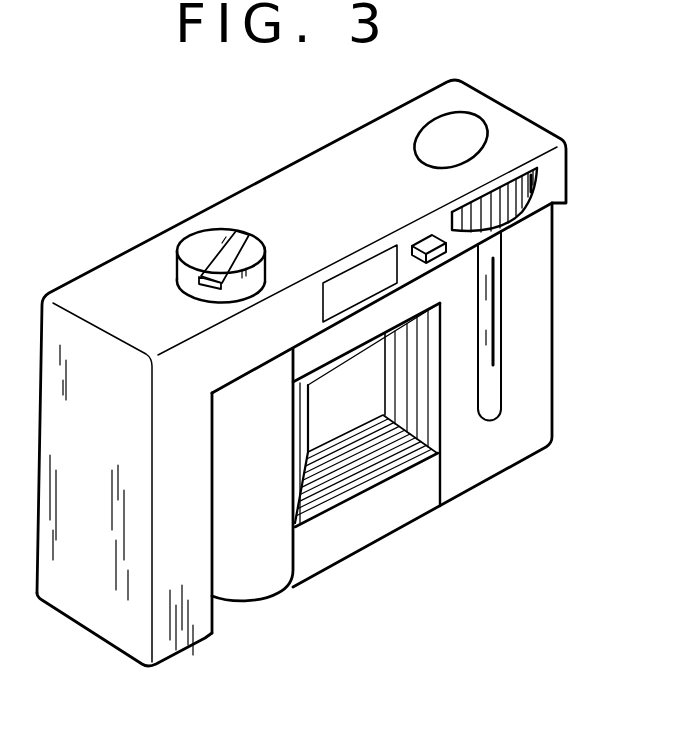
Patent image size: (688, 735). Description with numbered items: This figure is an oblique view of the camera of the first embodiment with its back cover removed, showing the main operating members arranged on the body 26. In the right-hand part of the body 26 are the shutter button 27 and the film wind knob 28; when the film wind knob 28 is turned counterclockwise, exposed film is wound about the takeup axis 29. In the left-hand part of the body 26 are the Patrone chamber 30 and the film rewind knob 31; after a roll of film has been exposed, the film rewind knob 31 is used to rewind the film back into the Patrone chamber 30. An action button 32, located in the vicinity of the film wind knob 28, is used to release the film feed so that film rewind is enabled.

The body 26 is at (283, 178).
The shutter button 27 is at (474, 137).
The film wind knob 28 is at (537, 200).
The takeup axis 29 is at (491, 300).
The Patrone chamber 30 is at (267, 482).
The film rewind knob 31 is at (190, 248).
The action button 32 is at (426, 235).